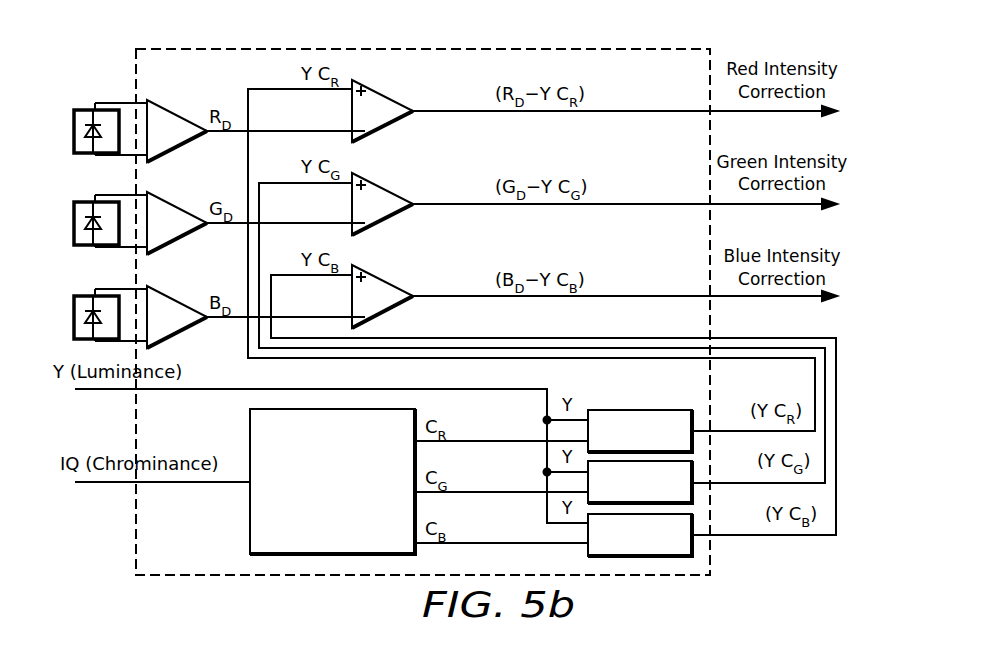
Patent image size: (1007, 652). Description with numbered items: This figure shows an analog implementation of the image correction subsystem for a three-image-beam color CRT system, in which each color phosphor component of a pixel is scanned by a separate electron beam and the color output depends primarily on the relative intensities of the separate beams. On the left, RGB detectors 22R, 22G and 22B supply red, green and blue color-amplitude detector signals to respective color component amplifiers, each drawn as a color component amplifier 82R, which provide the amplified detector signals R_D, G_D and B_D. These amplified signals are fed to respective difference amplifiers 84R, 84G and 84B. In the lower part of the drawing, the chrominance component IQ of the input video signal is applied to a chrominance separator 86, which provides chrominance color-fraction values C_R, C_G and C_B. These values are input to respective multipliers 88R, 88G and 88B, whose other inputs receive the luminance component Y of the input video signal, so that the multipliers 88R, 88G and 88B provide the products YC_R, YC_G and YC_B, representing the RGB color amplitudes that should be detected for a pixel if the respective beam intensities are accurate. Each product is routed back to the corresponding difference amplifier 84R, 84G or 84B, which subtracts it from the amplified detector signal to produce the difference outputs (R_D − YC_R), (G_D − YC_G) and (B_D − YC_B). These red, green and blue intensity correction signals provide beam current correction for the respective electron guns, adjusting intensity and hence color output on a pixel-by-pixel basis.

The red detector 22R is at (78, 110).
The green detector 22G is at (78, 202).
The blue detector 22B is at (78, 296).
The color component amplifier 82R is at (161, 108).
The difference amplifier 84R is at (392, 81).
The difference amplifier 84G is at (392, 174).
The difference amplifier 84B is at (392, 266).
The chrominance separator 86 is at (332, 481).
The multiplier 88R is at (655, 410).
The multiplier 88G is at (692, 471).
The multiplier 88B is at (692, 522).